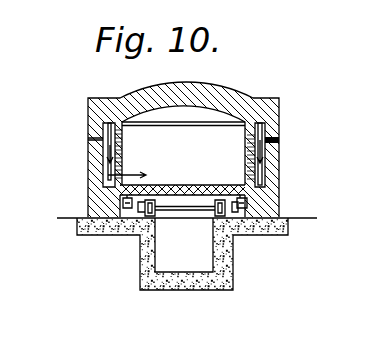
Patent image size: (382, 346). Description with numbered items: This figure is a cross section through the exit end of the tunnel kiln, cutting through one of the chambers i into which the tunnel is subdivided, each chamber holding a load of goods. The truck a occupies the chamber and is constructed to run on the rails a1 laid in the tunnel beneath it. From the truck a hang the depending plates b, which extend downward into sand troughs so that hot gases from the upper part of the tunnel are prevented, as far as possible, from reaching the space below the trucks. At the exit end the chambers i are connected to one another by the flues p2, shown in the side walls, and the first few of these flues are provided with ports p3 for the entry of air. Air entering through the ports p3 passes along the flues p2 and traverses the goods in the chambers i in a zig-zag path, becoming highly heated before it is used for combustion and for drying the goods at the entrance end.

The chamber i is at (185, 155).
The truck a is at (183, 152).
The rails a1 is at (218, 218).
The depending plate b is at (247, 203).
The flue p2 is at (265, 165).
The port p3 is at (265, 146).